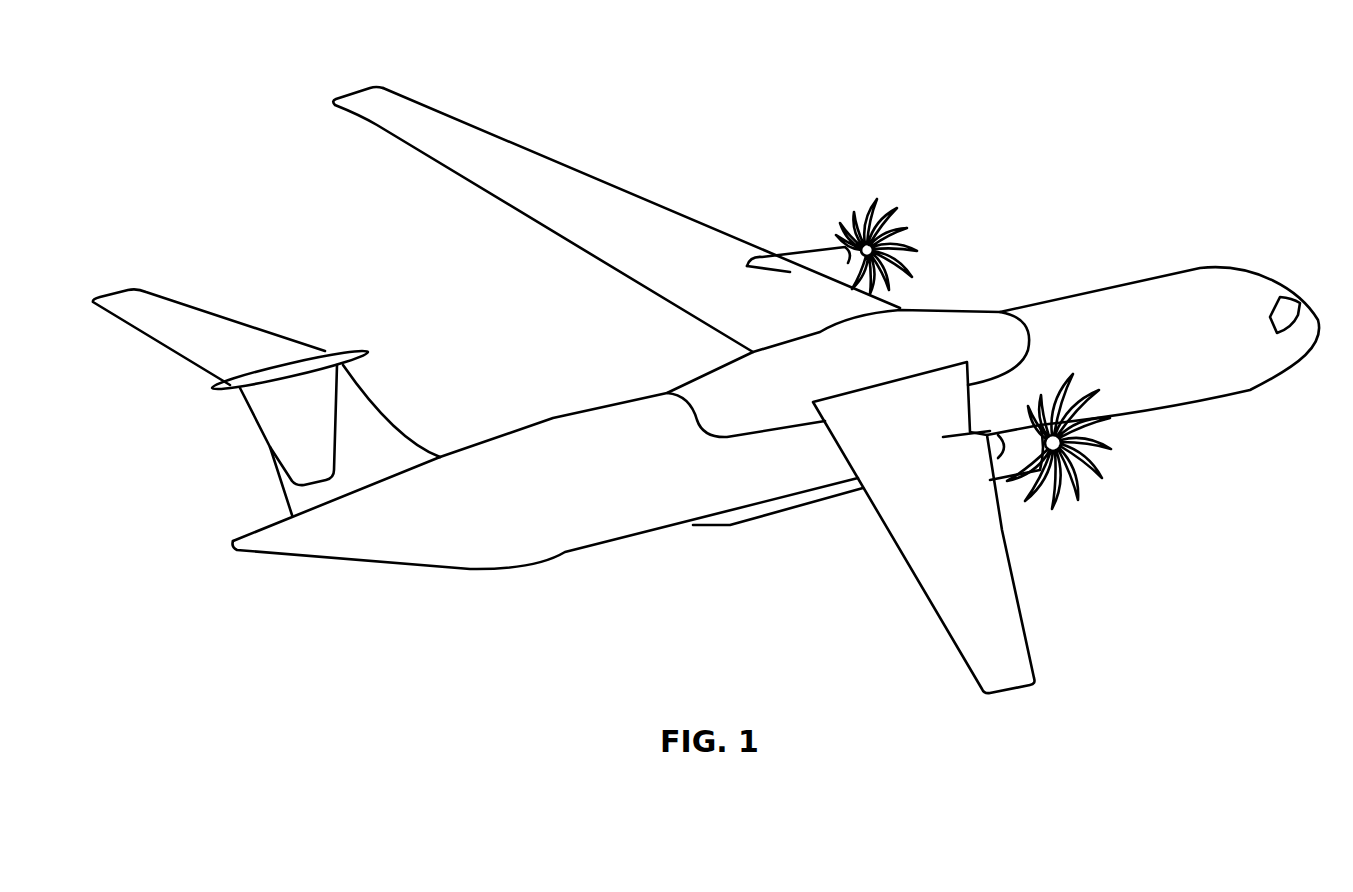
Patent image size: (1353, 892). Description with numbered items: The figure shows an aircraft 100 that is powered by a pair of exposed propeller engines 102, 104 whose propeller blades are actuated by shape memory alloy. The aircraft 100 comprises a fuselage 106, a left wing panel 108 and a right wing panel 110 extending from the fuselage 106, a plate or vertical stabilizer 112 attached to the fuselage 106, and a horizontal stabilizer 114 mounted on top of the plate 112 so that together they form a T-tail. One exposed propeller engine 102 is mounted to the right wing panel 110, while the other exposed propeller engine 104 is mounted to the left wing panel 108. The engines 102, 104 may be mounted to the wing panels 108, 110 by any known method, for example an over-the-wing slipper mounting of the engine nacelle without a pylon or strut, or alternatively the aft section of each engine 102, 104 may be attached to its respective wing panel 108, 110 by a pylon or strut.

The aircraft 100 is at (706, 370).
The exposed propeller engine 102 is at (1094, 524).
The exposed propeller engine 104 is at (839, 176).
The fuselage 106 is at (1150, 278).
The left wing panel 108 is at (558, 161).
The right wing panel 110 is at (922, 588).
The plate or vertical stabilizer 112 is at (382, 417).
The horizontal stabilizer 114 is at (240, 322).